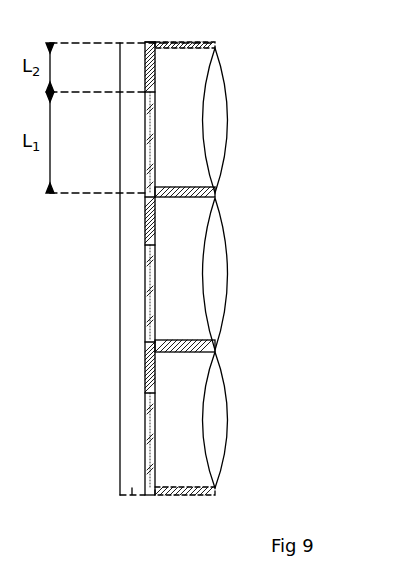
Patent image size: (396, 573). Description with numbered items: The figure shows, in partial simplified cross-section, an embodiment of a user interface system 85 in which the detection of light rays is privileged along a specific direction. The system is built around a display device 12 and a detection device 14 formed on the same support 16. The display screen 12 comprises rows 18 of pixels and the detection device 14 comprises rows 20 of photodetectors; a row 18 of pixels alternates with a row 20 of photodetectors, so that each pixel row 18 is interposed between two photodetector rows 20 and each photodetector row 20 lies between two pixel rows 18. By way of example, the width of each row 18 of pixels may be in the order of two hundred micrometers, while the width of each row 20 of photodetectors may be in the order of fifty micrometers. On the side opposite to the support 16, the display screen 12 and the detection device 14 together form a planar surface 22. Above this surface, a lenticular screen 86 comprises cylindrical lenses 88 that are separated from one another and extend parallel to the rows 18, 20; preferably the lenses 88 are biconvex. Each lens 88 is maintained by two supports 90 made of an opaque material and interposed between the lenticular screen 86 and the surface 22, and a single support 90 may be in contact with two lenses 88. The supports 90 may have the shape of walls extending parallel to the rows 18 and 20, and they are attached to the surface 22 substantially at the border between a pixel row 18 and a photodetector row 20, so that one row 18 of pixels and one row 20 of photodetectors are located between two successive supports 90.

The display device 12 is at (145, 262).
The detection device 14 is at (145, 350).
The support 16 is at (132, 493).
The rows of pixels 18 is at (146, 141).
The rows of photodetectors 20 is at (146, 72).
The planar surface 22 is at (153, 81).
The user interface system 85 is at (337, 70).
The lenticular screen 86 is at (226, 462).
The cylindrical lenses 88 is at (218, 115).
The supports 90 is at (209, 43).